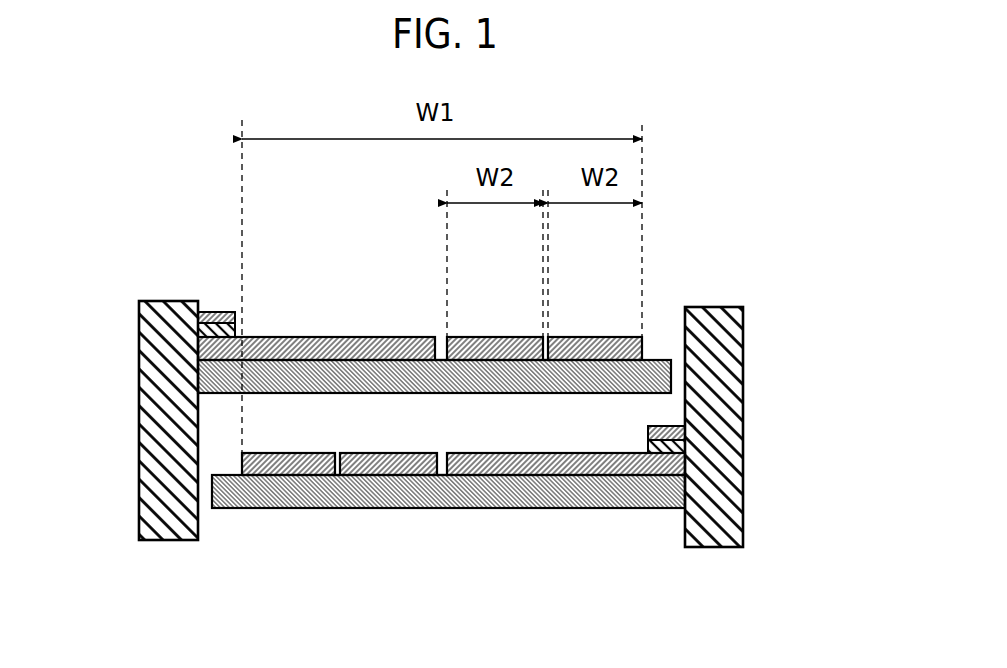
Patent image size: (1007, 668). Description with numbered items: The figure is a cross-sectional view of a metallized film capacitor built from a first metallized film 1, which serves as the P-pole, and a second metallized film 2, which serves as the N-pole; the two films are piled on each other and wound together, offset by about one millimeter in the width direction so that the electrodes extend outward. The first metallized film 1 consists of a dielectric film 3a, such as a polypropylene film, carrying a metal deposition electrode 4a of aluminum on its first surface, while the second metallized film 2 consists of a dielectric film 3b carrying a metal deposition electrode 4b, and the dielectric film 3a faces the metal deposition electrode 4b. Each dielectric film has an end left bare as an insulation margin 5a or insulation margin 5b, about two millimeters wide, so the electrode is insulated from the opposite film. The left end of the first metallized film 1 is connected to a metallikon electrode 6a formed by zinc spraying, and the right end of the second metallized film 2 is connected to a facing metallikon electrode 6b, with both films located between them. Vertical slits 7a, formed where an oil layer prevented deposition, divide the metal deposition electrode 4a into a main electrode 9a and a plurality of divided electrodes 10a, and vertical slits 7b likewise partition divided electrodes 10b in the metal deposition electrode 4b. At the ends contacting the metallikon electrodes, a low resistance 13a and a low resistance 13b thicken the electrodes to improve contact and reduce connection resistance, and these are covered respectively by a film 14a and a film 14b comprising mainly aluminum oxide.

The first metallized film 1 is at (213, 265).
The second metallized film 2 is at (658, 535).
The dielectric film 3a is at (405, 373).
The dielectric film 3b is at (310, 492).
The metal deposition electrode 4a is at (330, 345).
The metal deposition electrode 4b is at (497, 472).
The insulation margin 5a is at (650, 378).
The insulation margin 5b is at (220, 490).
The metallikon electrode 6a is at (140, 358).
The metallikon electrode 6b is at (720, 362).
The vertical slits 7a is at (543, 340).
The vertical slits 7b is at (340, 468).
The main electrode 9a is at (413, 345).
The divided electrodes 10a is at (512, 340).
The divided electrodes 10b is at (266, 468).
The low resistance 13a is at (205, 326).
The low resistance 13b is at (668, 450).
The film 14a is at (217, 312).
The film 14b is at (672, 431).